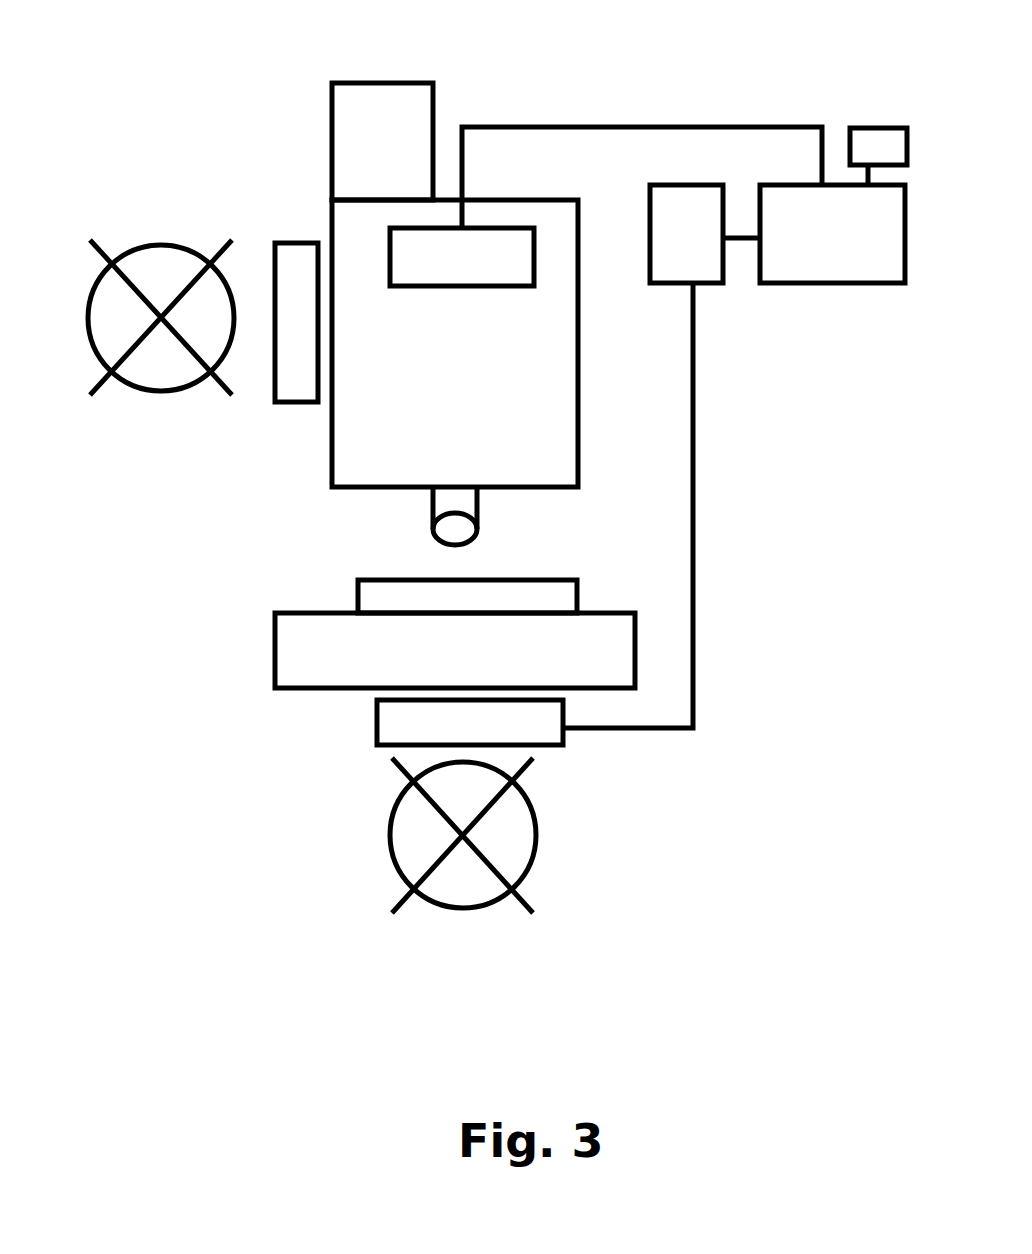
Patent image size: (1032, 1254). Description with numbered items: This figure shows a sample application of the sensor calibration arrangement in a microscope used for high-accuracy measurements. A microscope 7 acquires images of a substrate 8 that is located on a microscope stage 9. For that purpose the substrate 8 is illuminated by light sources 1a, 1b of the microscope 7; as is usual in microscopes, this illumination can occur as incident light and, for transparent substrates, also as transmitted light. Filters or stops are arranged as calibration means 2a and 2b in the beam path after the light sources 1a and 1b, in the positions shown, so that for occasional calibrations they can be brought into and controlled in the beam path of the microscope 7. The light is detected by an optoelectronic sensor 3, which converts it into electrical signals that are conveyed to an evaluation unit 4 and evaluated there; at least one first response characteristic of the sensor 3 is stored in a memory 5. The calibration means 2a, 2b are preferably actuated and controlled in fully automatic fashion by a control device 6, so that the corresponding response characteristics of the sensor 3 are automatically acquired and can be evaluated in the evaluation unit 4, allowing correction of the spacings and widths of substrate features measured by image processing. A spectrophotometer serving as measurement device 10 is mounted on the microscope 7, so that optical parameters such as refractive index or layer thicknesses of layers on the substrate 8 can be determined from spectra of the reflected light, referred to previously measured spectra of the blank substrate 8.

The light source 1a is at (537, 827).
The light source 1b is at (147, 246).
The calibration means 2a is at (377, 715).
The calibration means 2b is at (303, 243).
The optoelectronic sensor 3 is at (535, 285).
The evaluation unit 4 is at (805, 275).
The memory 5 is at (890, 128).
The control device 6 is at (720, 285).
The microscope 7 is at (330, 448).
The substrate 8 is at (358, 593).
The microscope stage 9 is at (275, 645).
The measurement device 10 is at (360, 83).